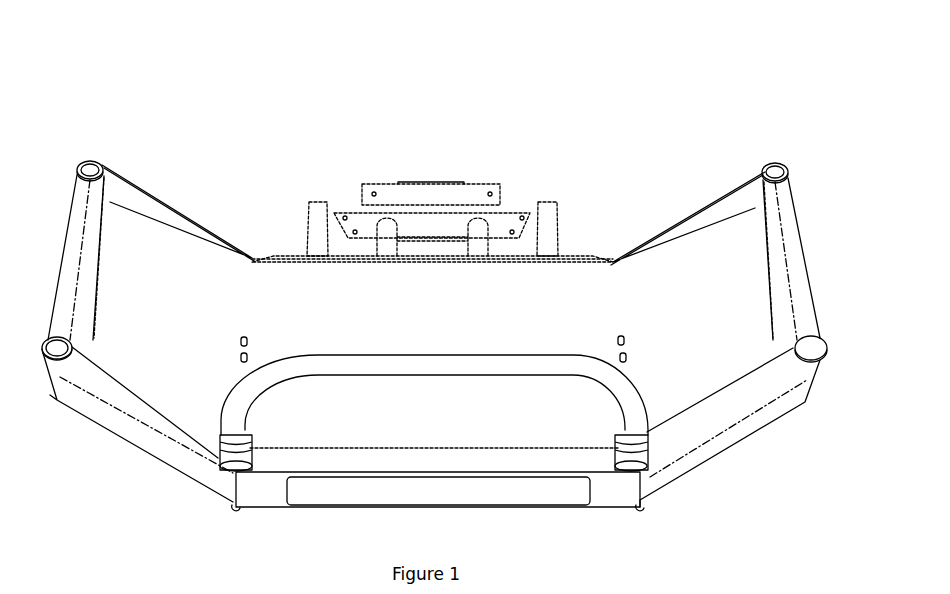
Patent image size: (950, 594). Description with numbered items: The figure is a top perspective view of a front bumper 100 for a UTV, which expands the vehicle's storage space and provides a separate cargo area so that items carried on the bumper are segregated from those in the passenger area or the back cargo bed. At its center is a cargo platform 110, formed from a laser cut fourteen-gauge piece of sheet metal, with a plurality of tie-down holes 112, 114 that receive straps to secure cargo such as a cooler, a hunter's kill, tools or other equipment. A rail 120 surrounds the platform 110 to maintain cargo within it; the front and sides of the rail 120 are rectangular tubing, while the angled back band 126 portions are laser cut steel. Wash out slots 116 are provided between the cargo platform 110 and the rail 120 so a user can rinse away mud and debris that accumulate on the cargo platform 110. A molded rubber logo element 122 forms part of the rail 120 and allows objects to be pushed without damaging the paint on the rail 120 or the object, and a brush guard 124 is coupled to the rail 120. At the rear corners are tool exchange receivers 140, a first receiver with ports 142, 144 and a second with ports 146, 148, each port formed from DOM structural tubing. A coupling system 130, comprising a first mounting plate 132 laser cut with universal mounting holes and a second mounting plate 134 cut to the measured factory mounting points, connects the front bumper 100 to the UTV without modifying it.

The front bumper 100 is at (600, 177).
The cargo platform 110 is at (700, 368).
The tie-down hole 112 is at (640, 330).
The tie-down hole 114 is at (233, 333).
The wash out slot 116 is at (100, 287).
The rail 120 is at (107, 408).
The molded rubber logo element 122 is at (497, 503).
The brush guard 124 is at (430, 365).
The angled back band 126 is at (163, 216).
The coupling system 130 is at (527, 186).
The first mounting plate 132 is at (358, 223).
The second mounting plate 134 is at (417, 193).
The tool exchange receiver 140 is at (110, 217).
The tool exchange port 142 is at (778, 162).
The tool exchange port 144 is at (812, 343).
The tool exchange port 146 is at (90, 165).
The tool exchange port 148 is at (53, 349).